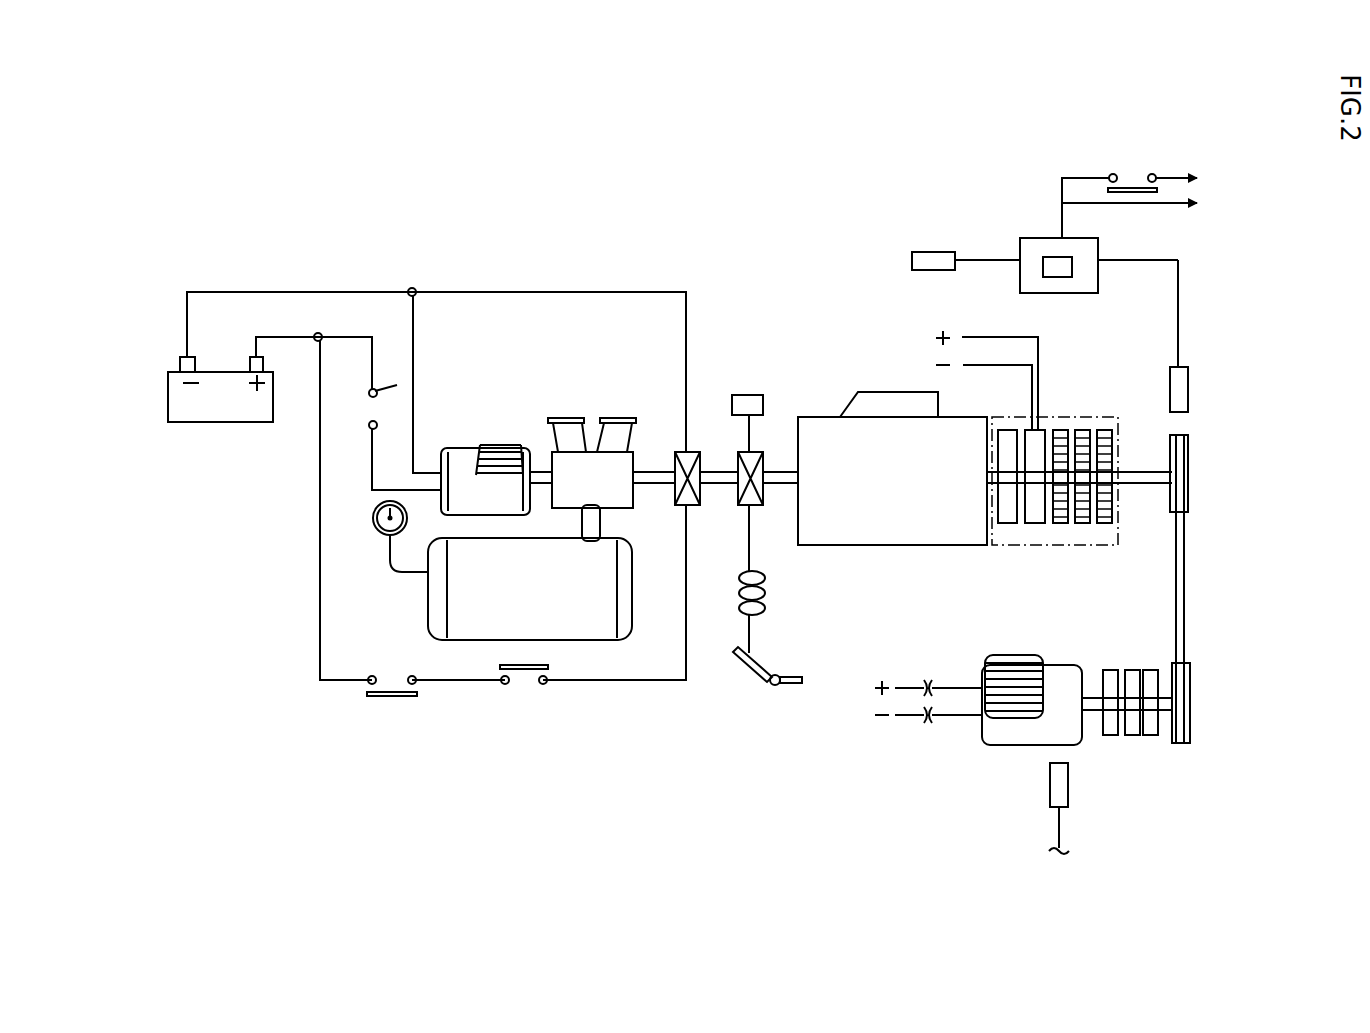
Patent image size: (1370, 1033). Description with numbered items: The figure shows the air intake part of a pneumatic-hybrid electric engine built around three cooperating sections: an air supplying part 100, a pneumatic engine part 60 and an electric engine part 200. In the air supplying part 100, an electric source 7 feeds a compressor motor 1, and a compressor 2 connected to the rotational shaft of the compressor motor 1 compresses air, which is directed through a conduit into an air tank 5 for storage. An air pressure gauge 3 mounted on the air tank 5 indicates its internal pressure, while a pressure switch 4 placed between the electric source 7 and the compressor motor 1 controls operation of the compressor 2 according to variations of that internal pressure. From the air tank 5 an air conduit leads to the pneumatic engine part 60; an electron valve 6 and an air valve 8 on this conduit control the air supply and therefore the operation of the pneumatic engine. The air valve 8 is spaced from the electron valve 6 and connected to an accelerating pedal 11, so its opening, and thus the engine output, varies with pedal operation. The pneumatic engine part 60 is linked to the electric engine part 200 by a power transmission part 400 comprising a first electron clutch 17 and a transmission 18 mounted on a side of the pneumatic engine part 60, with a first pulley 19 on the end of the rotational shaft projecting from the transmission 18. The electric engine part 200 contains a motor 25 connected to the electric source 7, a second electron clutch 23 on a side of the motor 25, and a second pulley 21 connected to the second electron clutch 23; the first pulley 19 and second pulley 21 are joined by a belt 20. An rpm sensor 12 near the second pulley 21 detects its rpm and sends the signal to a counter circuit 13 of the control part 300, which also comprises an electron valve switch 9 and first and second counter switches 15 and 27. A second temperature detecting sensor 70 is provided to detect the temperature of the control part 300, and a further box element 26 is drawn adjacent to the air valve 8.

The compressor motor 1 is at (497, 460).
The compressor 2 is at (563, 427).
The air pressure gauge 3 is at (373, 533).
The pressure switch 4 is at (384, 388).
The air tank 5 is at (602, 627).
The electron valve 6 is at (693, 455).
The electric source 7 is at (208, 413).
The air valve 8 is at (755, 457).
The electron valve switch 9 is at (523, 672).
The accelerating pedal 11 is at (762, 675).
The rpm sensor 12 is at (1183, 390).
The counter circuit 13 is at (1047, 263).
The first counter switch 15 is at (395, 697).
The first electron clutch 17 is at (1037, 517).
The transmission 18 is at (1083, 520).
The first pulley 19 is at (1188, 478).
The belt 20 is at (1180, 600).
The second pulley 21 is at (1190, 685).
The second electron clutch 23 is at (1133, 727).
The motor 25 is at (1015, 768).
The actuator 26 is at (742, 392).
The second counter switch 27 is at (1132, 183).
The pneumatic engine part 60 is at (907, 547).
The second temperature detecting sensor 70 is at (923, 252).
The air supplying part 100 is at (617, 390).
The electric engine part 200 is at (1220, 758).
The control part 300 is at (1120, 242).
The power transmission part 400 is at (1217, 537).